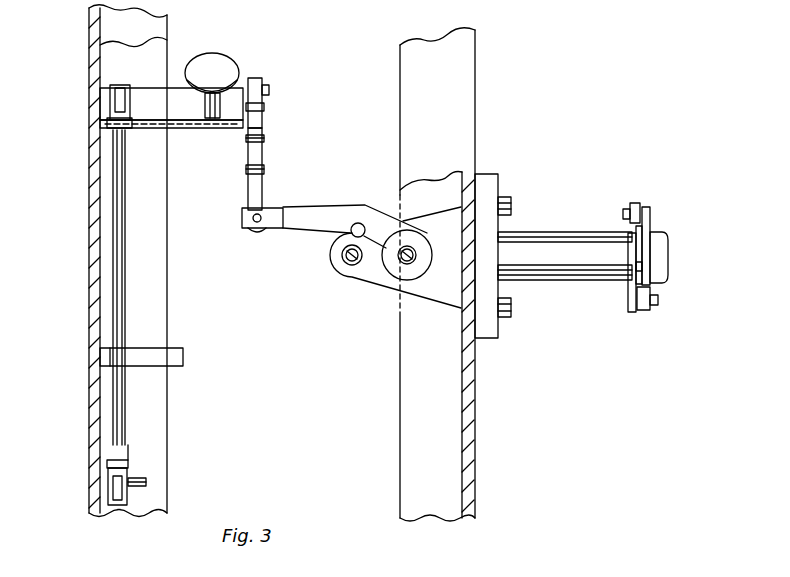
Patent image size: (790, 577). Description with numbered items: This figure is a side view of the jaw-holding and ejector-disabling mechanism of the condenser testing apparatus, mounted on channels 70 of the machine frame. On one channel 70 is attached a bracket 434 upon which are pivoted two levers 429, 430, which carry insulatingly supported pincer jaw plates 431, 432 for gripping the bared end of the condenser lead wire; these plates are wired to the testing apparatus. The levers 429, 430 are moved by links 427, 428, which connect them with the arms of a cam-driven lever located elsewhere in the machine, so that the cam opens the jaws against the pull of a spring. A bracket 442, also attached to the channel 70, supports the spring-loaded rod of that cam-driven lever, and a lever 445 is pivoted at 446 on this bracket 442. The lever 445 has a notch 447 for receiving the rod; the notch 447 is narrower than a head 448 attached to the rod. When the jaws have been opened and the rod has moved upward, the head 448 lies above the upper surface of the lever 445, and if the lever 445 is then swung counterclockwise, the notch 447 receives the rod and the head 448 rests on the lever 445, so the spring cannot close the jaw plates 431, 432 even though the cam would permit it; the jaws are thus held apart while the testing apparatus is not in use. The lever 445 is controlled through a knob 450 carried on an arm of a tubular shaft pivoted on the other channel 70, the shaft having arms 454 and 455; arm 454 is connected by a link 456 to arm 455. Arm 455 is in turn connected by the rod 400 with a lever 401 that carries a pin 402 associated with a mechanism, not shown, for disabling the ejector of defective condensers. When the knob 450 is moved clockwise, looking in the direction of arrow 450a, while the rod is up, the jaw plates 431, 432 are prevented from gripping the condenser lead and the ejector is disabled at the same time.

The channel 70 is at (90, 288).
The arrow 450a is at (66, 79).
The arm 455 is at (121, 86).
The rod 400 is at (121, 297).
The knob 450 is at (230, 51).
The arm 454 is at (241, 88).
The link 456 is at (263, 125).
The lever 445 is at (336, 211).
The notch 447 is at (351, 229).
The bracket 442 is at (392, 290).
The head 448 is at (341, 261).
The pivot 446 is at (411, 254).
The bracket 434 is at (576, 238).
The lever 429 is at (632, 299).
The pincer jaw plate 432 is at (638, 251).
The pincer jaw plate 431 is at (638, 267).
The lever 430 is at (652, 217).
The link 428 is at (634, 203).
The link 427 is at (640, 312).
The lever 401 is at (118, 505).
The pin 402 is at (147, 487).